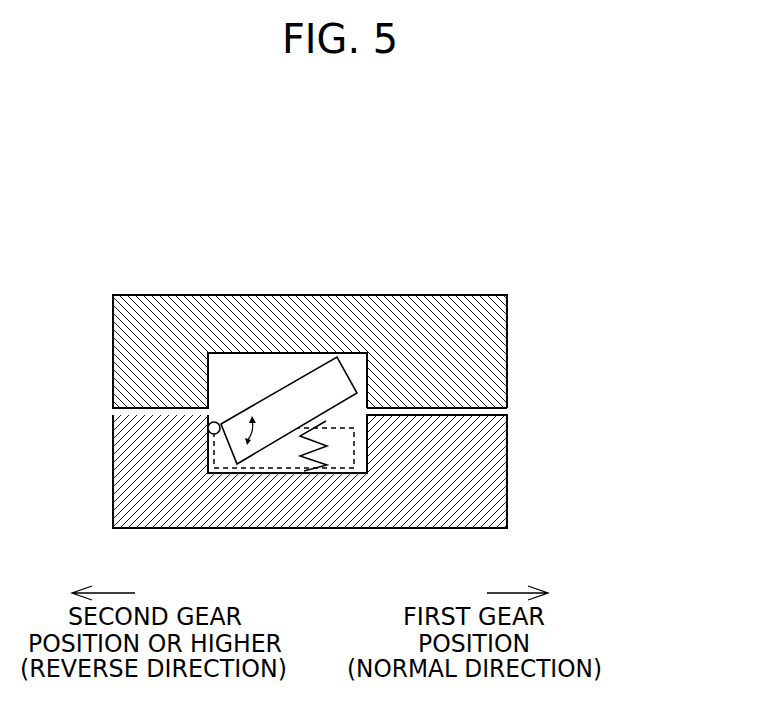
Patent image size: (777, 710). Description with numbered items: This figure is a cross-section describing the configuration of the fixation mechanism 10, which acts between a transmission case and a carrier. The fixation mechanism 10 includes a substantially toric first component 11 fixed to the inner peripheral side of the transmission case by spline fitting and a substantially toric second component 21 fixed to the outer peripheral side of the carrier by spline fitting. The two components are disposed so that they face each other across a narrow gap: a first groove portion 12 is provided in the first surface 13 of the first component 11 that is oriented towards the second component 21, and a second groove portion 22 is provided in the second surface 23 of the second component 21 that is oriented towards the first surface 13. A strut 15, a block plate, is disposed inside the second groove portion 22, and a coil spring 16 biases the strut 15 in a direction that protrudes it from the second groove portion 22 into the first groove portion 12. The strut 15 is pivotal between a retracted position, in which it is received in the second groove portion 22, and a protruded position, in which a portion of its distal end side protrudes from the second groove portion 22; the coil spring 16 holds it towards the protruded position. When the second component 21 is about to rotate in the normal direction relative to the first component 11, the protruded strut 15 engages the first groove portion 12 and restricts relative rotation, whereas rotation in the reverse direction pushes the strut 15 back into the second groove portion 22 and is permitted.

The fixation mechanism 10 is at (516, 266).
The first component 11 is at (487, 356).
The first groove portion 12 is at (290, 362).
The first surface 13 is at (458, 409).
The strut 15 is at (327, 372).
The coil spring 16 is at (325, 438).
The second component 21 is at (483, 470).
The second groove portion 22 is at (275, 466).
The second surface 23 is at (435, 416).